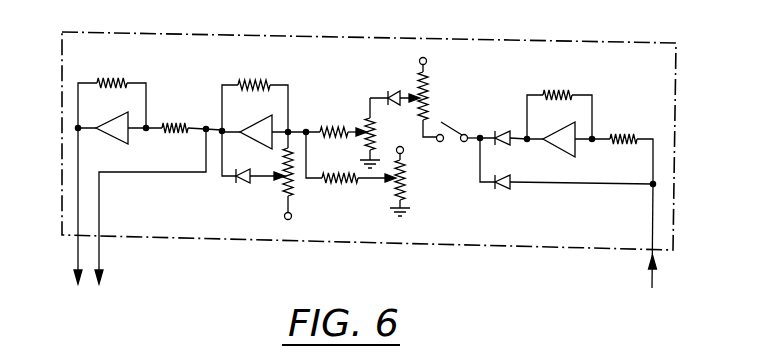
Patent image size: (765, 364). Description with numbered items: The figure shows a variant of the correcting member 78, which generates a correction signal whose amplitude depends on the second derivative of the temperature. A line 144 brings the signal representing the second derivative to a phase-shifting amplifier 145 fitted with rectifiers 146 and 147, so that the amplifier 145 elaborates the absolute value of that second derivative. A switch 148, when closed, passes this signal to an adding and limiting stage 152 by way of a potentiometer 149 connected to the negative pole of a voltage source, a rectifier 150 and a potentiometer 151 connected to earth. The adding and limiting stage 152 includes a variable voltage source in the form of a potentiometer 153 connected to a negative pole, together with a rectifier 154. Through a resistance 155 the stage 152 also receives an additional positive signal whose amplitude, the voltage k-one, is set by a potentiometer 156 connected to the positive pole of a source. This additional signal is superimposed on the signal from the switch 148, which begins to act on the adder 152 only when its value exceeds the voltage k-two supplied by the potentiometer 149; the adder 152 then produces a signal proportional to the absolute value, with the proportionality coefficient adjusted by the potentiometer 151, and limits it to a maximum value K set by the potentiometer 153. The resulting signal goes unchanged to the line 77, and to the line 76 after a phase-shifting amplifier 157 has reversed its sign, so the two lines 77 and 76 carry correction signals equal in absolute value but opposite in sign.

The correcting member 78 is at (572, 40).
The line 76 is at (75, 257).
The line 77 is at (102, 255).
The phase-shifting amplifier 157 is at (115, 140).
The adding and limiting stage 152 is at (253, 122).
The potentiometer 153 is at (271, 194).
The rectifier 154 is at (241, 183).
The resistance 155 is at (333, 186).
The potentiometer 156 is at (388, 187).
The potentiometer 151 is at (363, 129).
The rectifier 150 is at (386, 94).
The potentiometer 149 is at (415, 95).
The switch 148 is at (448, 144).
The rectifier 146 is at (502, 131).
The rectifier 147 is at (498, 190).
The phase-shifting amplifier 145 is at (556, 149).
The line 144 is at (650, 288).